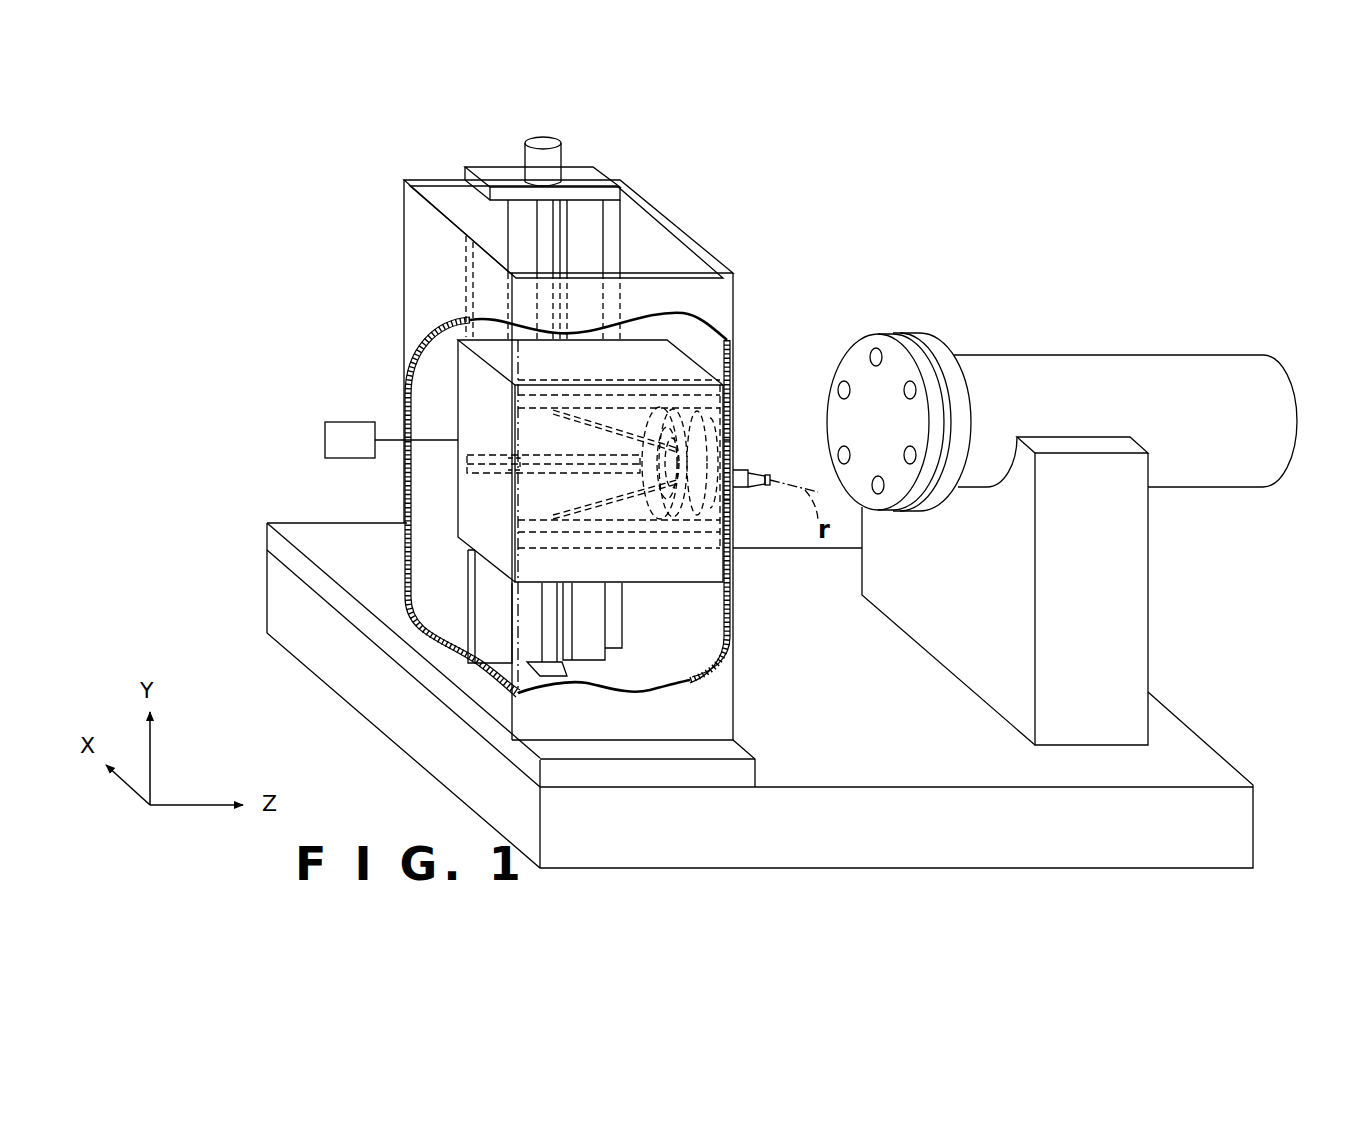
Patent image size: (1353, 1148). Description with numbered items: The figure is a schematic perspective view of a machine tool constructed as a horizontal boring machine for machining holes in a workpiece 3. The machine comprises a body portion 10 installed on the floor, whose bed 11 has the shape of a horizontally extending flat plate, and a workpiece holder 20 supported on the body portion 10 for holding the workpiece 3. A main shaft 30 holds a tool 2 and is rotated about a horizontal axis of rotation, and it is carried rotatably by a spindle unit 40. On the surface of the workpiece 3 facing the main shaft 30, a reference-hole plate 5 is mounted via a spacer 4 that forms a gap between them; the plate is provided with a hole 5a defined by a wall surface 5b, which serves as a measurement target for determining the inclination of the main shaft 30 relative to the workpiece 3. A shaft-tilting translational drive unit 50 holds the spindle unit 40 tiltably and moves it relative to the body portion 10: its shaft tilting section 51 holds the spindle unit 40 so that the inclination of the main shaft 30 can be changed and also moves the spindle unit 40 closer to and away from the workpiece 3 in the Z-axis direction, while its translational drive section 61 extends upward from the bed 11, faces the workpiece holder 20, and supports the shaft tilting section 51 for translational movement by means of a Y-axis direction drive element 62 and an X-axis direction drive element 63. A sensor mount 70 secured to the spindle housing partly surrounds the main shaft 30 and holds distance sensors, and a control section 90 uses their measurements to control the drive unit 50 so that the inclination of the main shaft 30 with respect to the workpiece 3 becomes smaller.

The tool 2 is at (770, 480).
The workpiece 3 is at (935, 345).
The spacer 4 is at (935, 485).
The reference-hole plate 5 is at (912, 495).
The hole 5a is at (870, 355).
The wall surface 5b is at (878, 478).
The body portion 10 is at (252, 604).
The bed 11 is at (360, 683).
The workpiece holder 20 is at (975, 648).
The main shaft 30 is at (760, 492).
The spindle unit 40 is at (719, 447).
The shaft-tilting translational drive unit 50 is at (695, 347).
The shaft tilting section 51 is at (714, 417).
The translational drive section 61 is at (393, 250).
The Y-axis direction drive element 62 is at (580, 170).
The X-axis direction drive element 63 is at (325, 540).
The sensor mount 70 is at (743, 497).
The control section 90 is at (350, 422).